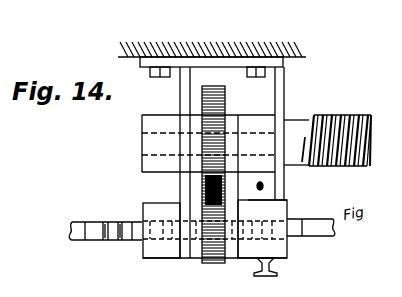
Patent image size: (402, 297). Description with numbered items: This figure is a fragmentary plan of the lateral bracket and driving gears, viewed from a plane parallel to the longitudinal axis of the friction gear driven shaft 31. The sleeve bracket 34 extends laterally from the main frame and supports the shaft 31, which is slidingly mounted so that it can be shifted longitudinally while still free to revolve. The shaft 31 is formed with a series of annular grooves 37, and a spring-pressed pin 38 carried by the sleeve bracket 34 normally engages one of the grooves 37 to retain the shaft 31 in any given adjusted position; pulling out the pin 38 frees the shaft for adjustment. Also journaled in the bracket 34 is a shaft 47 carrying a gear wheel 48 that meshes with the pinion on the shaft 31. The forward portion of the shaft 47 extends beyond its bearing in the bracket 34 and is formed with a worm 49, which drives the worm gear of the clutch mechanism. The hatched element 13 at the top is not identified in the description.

The base plate / support 13 is at (270, 50).
The shaft 31 is at (93, 224).
The bracket 34 is at (150, 203).
The annular grooves 37 is at (128, 239).
The spring-pressed pin 38 is at (278, 265).
The shaft 47 is at (142, 135).
The gear wheel 48 is at (222, 116).
The worm 49 is at (335, 115).